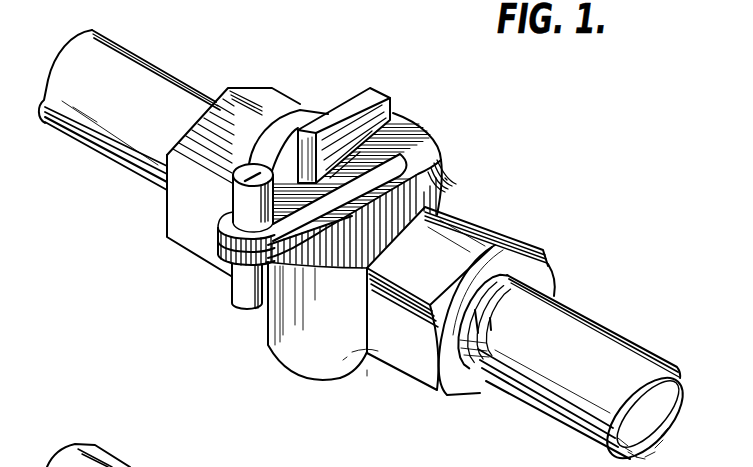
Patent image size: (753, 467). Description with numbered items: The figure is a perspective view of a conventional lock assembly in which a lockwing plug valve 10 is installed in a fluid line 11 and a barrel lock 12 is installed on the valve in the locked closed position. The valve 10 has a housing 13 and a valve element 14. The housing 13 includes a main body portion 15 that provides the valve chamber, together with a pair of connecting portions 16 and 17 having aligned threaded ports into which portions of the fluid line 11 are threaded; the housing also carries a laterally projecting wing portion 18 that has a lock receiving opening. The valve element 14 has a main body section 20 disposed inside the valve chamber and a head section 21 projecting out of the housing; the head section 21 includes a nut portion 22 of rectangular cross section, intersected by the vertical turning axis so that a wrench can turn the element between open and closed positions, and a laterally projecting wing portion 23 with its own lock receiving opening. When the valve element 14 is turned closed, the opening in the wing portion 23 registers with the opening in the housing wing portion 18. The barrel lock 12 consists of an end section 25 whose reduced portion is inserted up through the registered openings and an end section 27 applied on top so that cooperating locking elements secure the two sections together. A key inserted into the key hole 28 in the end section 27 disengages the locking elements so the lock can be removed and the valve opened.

The lockwing plug valve 10 is at (454, 185).
The fluid line 11 is at (600, 308).
The barrel lock 12 is at (222, 292).
The housing 13 is at (272, 365).
The valve element 14 is at (407, 126).
The main body portion 15 is at (335, 367).
The connecting portion 16 is at (167, 228).
The connecting portion 17 is at (550, 262).
The wing portion 18 is at (217, 256).
The main body section 20 is at (417, 155).
The head section 21 is at (327, 102).
The nut portion 22 is at (363, 92).
The wing portion 23 is at (303, 222).
The end section 25 is at (243, 308).
The end section 27 is at (238, 203).
The key hole 28 is at (250, 163).